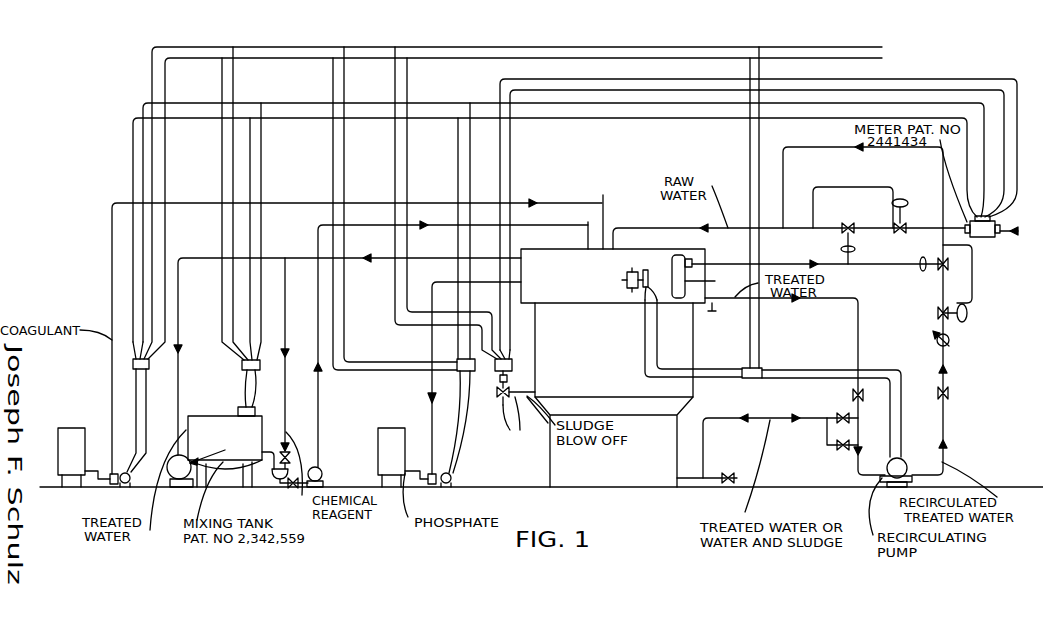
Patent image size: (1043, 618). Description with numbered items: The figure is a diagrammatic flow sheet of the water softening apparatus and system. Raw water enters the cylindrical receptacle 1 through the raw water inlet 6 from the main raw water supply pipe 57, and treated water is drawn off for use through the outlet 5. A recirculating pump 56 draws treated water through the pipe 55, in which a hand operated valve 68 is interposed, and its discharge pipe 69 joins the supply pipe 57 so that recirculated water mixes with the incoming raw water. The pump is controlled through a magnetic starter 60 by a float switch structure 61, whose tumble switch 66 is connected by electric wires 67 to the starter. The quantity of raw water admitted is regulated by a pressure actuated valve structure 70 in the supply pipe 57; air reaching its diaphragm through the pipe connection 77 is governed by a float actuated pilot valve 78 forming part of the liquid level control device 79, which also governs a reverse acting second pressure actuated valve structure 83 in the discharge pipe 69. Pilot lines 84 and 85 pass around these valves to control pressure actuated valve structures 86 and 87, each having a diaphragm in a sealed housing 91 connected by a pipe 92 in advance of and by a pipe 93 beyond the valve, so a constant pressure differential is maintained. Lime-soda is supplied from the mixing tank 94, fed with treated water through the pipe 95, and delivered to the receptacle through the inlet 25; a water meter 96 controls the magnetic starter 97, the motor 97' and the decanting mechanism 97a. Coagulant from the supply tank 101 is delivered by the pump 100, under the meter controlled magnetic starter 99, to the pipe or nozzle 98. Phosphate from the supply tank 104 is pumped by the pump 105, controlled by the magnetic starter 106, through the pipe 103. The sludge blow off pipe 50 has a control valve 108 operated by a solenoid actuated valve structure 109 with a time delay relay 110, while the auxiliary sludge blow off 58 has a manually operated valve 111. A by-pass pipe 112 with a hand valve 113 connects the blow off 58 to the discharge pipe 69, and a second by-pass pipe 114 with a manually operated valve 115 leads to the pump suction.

The receptacle 1 is at (697, 354).
The outlet 5 is at (713, 312).
The raw water inlet 6 is at (613, 240).
The inlet 25 is at (586, 236).
The sludge blow off pipe 50 is at (531, 418).
The pipe 55 is at (860, 338).
The recirculating pump 56 is at (893, 478).
The raw water supply pipe 57 is at (668, 228).
The auxiliary sludge blow off 58 is at (716, 481).
The magnetic starter 60 is at (762, 368).
The float switch structure 61 is at (627, 279).
The tumble switch 66 is at (648, 277).
The electric wires 67 is at (657, 360).
The hand operated valve 68 is at (853, 395).
The discharge pipe 69 is at (950, 388).
The pressure actuated valve structure 70 is at (846, 224).
The pipe connection 77 is at (876, 264).
The float actuated pilot valve 78 is at (693, 258).
The liquid level control device 79 is at (711, 283).
The second pressure actuated valve structure 83 is at (935, 274).
The pilot line 84 is at (862, 189).
The pilot line 85 is at (975, 288).
The pressure actuated valve structure 86 is at (905, 202).
The pressure actuated valve structure 87 is at (967, 315).
The sealed housing 91 is at (905, 207).
The pipe 92 is at (893, 226).
The pipe 93 is at (840, 187).
The mixing tank 94 is at (228, 464).
The pipe 95 is at (272, 258).
The water meter 96 is at (985, 234).
The magnetic starter 97 is at (232, 225).
The decanting mechanism 97a is at (238, 411).
The motor 97' is at (284, 399).
The pipe or nozzle 98 is at (605, 218).
The magnetic starter 99 is at (133, 366).
The pump 100 is at (114, 485).
The supply tank 101 is at (80, 432).
The pipe 103 is at (432, 298).
The supply tank 104 is at (390, 435).
The pump 105 is at (436, 484).
The magnetic starter 106 is at (508, 398).
The control valve 108 is at (508, 408).
The solenoid actuated valve structure 109 is at (507, 378).
The time delay relay 110 is at (512, 365).
The manually operated valve 111 is at (730, 474).
The by-pass pipe 112 is at (772, 418).
The hand valve 113 is at (827, 427).
The second by-pass pipe 114 is at (833, 447).
The manually operated valve 115 is at (843, 452).